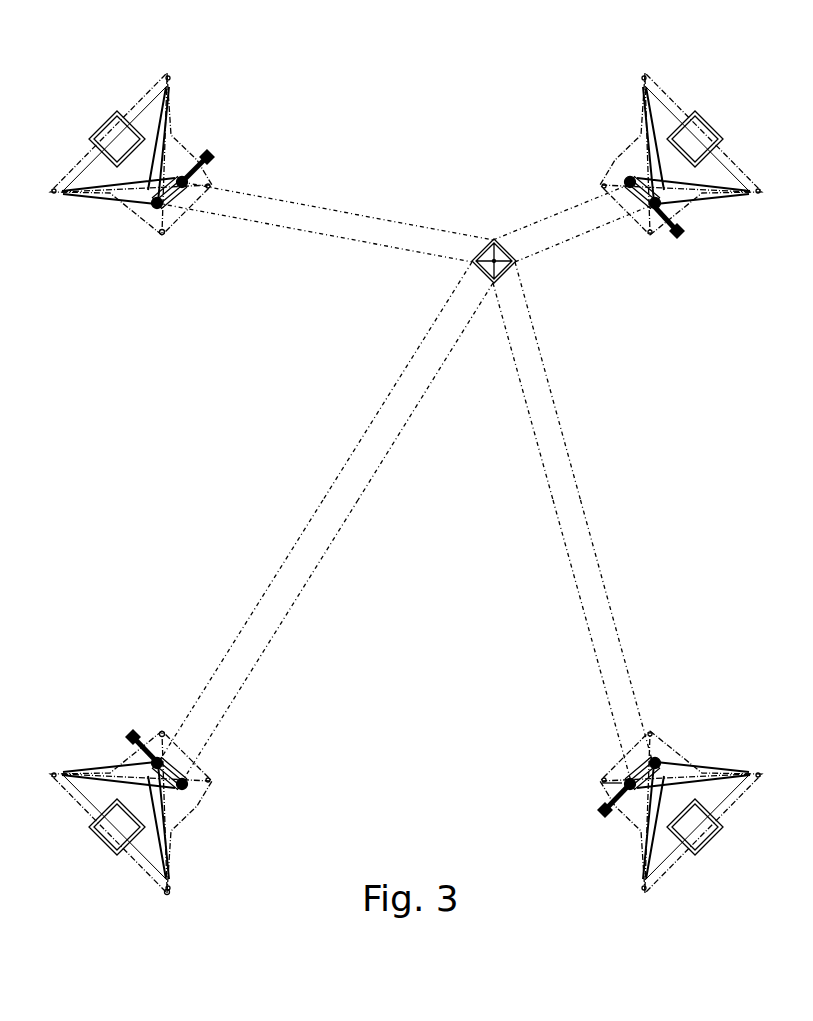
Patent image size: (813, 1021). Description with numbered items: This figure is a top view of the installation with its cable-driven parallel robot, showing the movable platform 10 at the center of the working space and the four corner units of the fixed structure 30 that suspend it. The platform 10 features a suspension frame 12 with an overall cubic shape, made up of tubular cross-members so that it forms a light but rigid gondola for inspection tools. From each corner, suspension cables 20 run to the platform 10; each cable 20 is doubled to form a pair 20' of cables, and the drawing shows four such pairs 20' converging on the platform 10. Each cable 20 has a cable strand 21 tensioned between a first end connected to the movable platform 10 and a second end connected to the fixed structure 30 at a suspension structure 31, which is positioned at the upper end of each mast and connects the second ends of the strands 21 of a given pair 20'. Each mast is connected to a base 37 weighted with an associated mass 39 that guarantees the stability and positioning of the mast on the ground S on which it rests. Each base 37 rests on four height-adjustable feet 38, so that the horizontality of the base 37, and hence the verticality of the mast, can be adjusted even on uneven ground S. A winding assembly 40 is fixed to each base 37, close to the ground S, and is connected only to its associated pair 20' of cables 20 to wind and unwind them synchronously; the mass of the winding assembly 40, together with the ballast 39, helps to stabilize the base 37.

The ground S is at (137, 905).
The movable platform 10 is at (493, 232).
The suspension frame 12 is at (506, 251).
The suspension cable 20 is at (404, 316).
The pair of cables 20' is at (584, 381).
The cable strand 21 is at (312, 570).
The fixed structure 30 is at (149, 71).
The suspension structure 31 is at (655, 182).
The base 37 is at (138, 218).
The height-adjustable foot 38 is at (163, 241).
The mass 39 is at (118, 137).
The winding assembly 40 is at (216, 152).